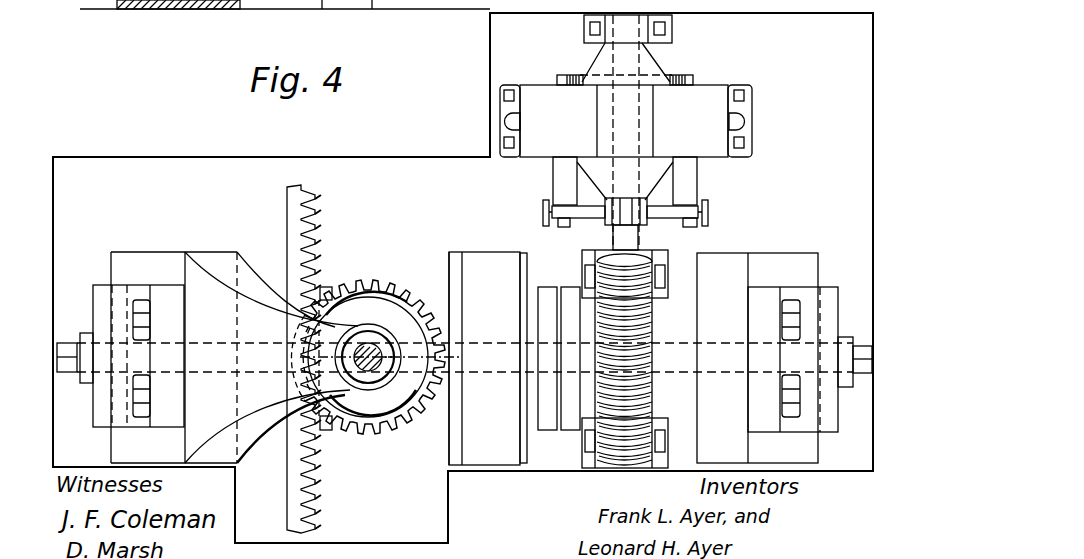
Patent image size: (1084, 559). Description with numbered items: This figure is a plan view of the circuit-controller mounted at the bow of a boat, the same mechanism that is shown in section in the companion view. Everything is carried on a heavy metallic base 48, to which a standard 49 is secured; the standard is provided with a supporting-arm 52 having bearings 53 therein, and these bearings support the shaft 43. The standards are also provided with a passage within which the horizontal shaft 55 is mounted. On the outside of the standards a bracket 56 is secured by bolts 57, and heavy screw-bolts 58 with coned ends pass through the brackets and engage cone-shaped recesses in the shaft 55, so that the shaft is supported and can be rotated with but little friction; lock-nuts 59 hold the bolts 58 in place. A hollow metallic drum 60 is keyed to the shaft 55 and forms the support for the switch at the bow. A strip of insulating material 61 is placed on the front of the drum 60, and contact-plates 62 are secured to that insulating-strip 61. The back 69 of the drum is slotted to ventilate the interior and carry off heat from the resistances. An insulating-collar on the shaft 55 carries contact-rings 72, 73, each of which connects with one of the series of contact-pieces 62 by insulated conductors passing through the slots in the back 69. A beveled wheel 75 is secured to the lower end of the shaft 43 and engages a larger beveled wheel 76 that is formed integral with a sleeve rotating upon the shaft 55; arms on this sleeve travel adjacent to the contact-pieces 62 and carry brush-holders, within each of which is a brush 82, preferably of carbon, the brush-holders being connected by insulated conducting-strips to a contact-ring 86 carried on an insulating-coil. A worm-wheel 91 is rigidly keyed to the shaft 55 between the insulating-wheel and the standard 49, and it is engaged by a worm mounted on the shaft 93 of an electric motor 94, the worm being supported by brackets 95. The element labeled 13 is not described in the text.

The shaft 13 is at (397, 358).
The shaft 43 is at (368, 372).
The heavy metallic base 48 is at (463, 278).
The standard 49 is at (757, 358).
The supporting-arm 52 is at (234, 357).
The bearings 53 is at (393, 385).
The horizontal shaft 55 is at (465, 357).
The bracket 56 is at (465, 358).
The bolts 57 is at (150, 322).
The heavy screw-bolts 58 is at (74, 343).
The lock-nuts 59 is at (84, 383).
The hollow metallic drum 60 is at (484, 358).
The strip of insulating material 61 is at (460, 276).
The contact-plates 62 is at (449, 280).
The back of the drum 69 is at (524, 258).
The contact-ring 72 is at (543, 288).
The contact-ring 73 is at (567, 288).
The beveled wheel 75 is at (368, 357).
The larger beveled wheel 76 is at (318, 485).
The brush 82 is at (440, 352).
The contact-ring 86 is at (343, 428).
The worm-wheel 91 is at (655, 323).
The shaft 93 is at (647, 238).
The electric motor 94 is at (626, 132).
The brackets 95 is at (662, 288).